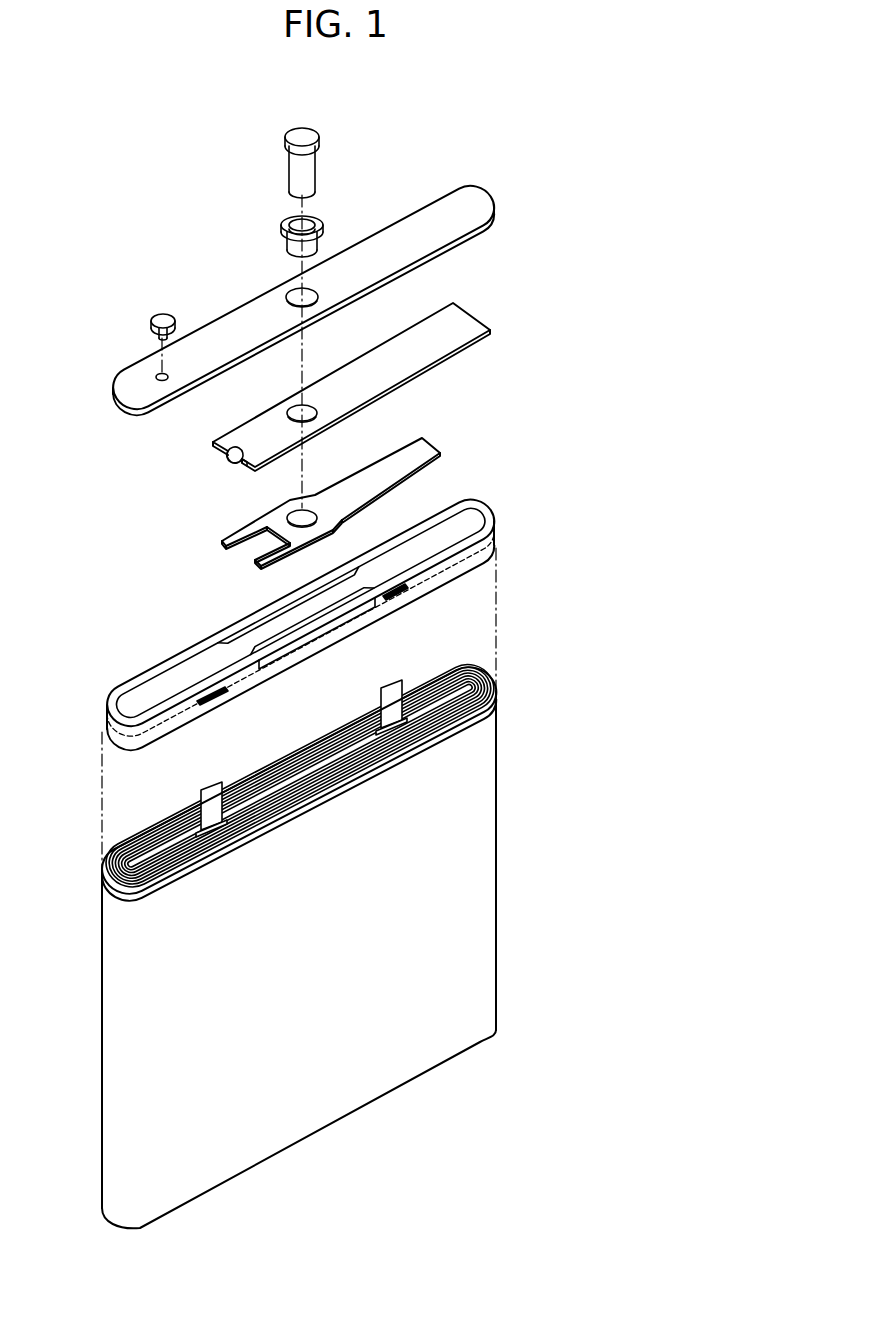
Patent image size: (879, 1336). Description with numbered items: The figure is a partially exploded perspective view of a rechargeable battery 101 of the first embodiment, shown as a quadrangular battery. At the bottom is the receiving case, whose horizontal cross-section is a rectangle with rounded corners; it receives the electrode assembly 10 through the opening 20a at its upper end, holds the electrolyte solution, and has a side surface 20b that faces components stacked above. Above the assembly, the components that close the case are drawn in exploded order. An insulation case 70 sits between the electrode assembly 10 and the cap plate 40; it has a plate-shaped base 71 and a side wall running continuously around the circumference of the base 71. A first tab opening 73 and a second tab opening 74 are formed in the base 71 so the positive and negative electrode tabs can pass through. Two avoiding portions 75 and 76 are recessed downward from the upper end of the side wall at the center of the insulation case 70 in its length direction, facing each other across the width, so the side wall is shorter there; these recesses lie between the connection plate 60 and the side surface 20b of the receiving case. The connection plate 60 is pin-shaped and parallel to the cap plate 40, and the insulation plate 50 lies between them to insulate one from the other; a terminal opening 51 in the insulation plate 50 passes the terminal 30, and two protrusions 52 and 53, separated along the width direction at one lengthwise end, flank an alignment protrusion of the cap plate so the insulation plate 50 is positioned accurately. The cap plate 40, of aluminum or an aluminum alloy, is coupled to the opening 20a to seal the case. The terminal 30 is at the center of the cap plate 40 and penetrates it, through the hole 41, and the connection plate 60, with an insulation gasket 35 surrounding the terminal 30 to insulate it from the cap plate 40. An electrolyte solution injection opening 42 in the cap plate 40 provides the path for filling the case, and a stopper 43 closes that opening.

The rechargeable battery 101 is at (387, 79).
The electrode assembly 10 is at (500, 686).
The opening 20a is at (458, 728).
The side surface 20b is at (482, 867).
The terminal 30 is at (288, 140).
The insulation gasket 35 is at (283, 224).
The cap plate 40 is at (480, 197).
The terminal hole 41 is at (320, 293).
The electrolyte solution injection opening 42 is at (156, 377).
The stopper 43 is at (152, 320).
The insulation plate 50 is at (486, 312).
The terminal opening 51 is at (318, 413).
The protrusion 52 is at (230, 452).
The protrusion 53 is at (246, 463).
The connection plate 60 is at (438, 450).
The insulation case 70 is at (104, 683).
The base 71 is at (185, 690).
The first tab opening 73 is at (214, 699).
The second tab opening 74 is at (408, 594).
The avoiding portion 75 is at (332, 639).
The avoiding portion 76 is at (272, 613).